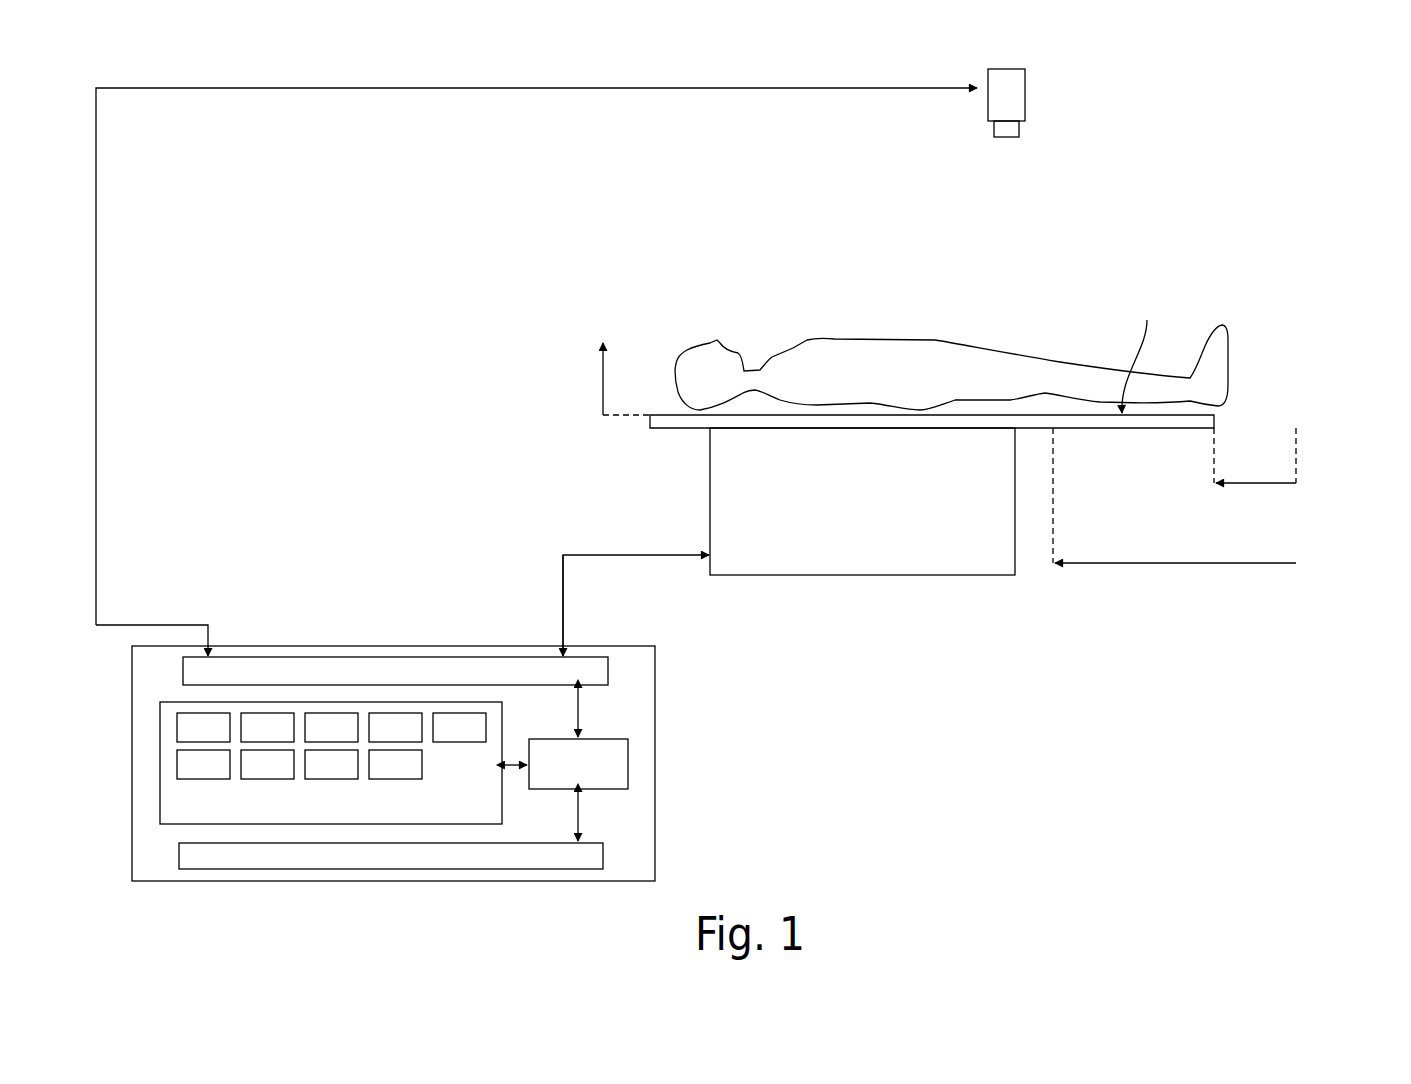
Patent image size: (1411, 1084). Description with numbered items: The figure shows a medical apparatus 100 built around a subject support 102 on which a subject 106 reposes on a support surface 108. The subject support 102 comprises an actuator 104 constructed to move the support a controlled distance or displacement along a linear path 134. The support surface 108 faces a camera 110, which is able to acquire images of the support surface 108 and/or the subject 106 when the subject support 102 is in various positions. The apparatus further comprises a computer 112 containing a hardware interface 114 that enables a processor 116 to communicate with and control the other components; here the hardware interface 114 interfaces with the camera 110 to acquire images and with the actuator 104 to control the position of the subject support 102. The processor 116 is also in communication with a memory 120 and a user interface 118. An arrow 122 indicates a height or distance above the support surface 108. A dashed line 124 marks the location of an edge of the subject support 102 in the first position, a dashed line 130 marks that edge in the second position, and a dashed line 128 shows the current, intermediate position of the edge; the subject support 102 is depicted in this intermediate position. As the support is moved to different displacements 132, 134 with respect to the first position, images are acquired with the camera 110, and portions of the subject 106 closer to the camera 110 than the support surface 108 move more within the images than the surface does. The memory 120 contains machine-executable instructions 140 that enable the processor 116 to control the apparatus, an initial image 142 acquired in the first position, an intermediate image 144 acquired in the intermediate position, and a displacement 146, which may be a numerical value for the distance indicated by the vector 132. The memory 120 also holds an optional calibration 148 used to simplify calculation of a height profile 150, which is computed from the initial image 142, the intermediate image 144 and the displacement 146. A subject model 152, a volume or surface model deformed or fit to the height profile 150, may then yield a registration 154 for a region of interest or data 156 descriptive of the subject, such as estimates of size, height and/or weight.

The medical apparatus 100 is at (1078, 776).
The subject support 102 is at (685, 430).
The actuator 104 is at (890, 568).
The subject 106 is at (1037, 354).
The support surface 108 is at (1146, 352).
The camera 110 is at (1026, 98).
The computer 112 is at (655, 765).
The hardware interface 114 is at (395, 671).
The processor 116 is at (566, 764).
The user interface 118 is at (391, 856).
The memory 120 is at (160, 755).
The arrow 122 is at (597, 388).
The dashed line (first position) 124 is at (1296, 460).
The dashed line (intermediate position) 128 is at (1214, 453).
The dashed line (second position) 130 is at (1053, 485).
The displacement vector 132 is at (1258, 485).
The linear path 134 is at (1100, 563).
The machine-executable instructions 140 is at (203, 728).
The initial image 142 is at (267, 728).
The intermediate image 144 is at (331, 728).
The displacement 146 is at (395, 728).
The calibration 148 is at (459, 728).
The height profile 150 is at (203, 765).
The subject model 152 is at (267, 765).
The registration 154 is at (331, 765).
The data descriptive of the subject 156 is at (395, 765).